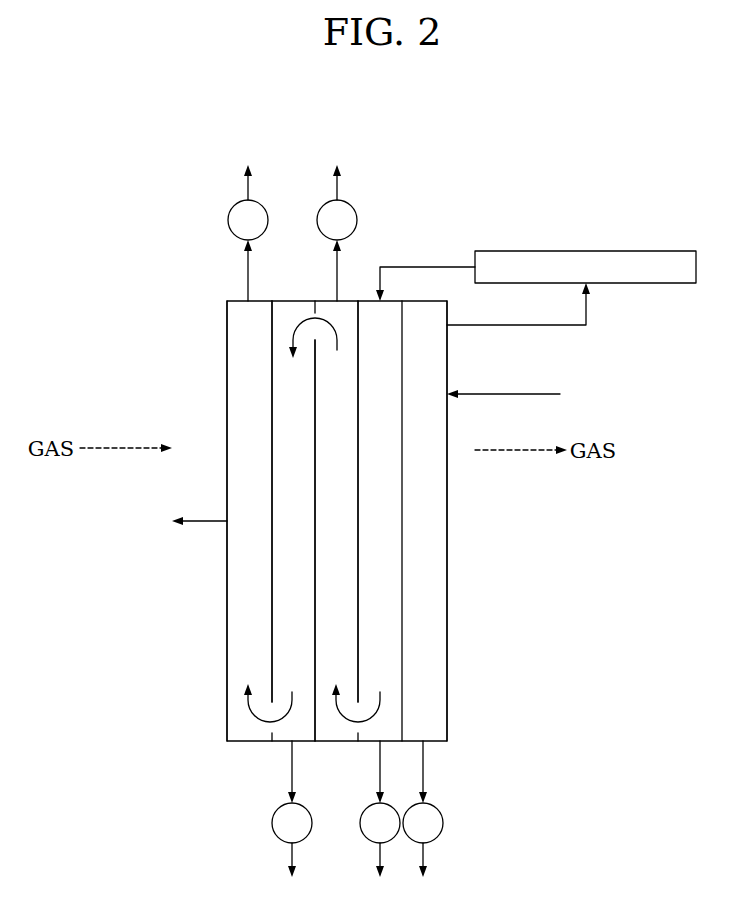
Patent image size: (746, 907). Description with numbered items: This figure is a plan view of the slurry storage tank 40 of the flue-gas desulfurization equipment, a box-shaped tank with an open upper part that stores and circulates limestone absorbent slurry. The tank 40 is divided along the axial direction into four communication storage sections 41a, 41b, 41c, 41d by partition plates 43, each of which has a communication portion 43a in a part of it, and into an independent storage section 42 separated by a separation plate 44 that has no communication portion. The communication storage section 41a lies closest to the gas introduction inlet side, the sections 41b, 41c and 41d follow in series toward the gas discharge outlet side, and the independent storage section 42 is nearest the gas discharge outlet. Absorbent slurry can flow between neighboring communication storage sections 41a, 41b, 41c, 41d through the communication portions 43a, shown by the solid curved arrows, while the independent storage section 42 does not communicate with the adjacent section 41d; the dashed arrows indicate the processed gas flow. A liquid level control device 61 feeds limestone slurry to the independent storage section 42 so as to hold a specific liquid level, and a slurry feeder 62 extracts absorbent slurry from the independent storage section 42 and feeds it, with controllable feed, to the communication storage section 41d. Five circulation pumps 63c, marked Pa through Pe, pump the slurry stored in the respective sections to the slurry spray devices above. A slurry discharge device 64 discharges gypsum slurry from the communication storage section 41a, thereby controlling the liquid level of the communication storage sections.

The slurry storage tank 40 is at (456, 713).
The communication storage section 41a is at (252, 369).
The communication storage section 41b is at (292, 400).
The communication storage section 41c is at (332, 437).
The communication storage section 41d is at (383, 487).
The independent storage section 42 is at (420, 553).
The partition plates 43 is at (358, 630).
The communication portion 43a is at (313, 318).
The separation plate 44 is at (402, 572).
The liquid level control device 61 is at (523, 384).
The slurry feeder 62 is at (618, 251).
The circulation pumps 63c is at (228, 220).
The slurry discharge device 64 is at (197, 511).